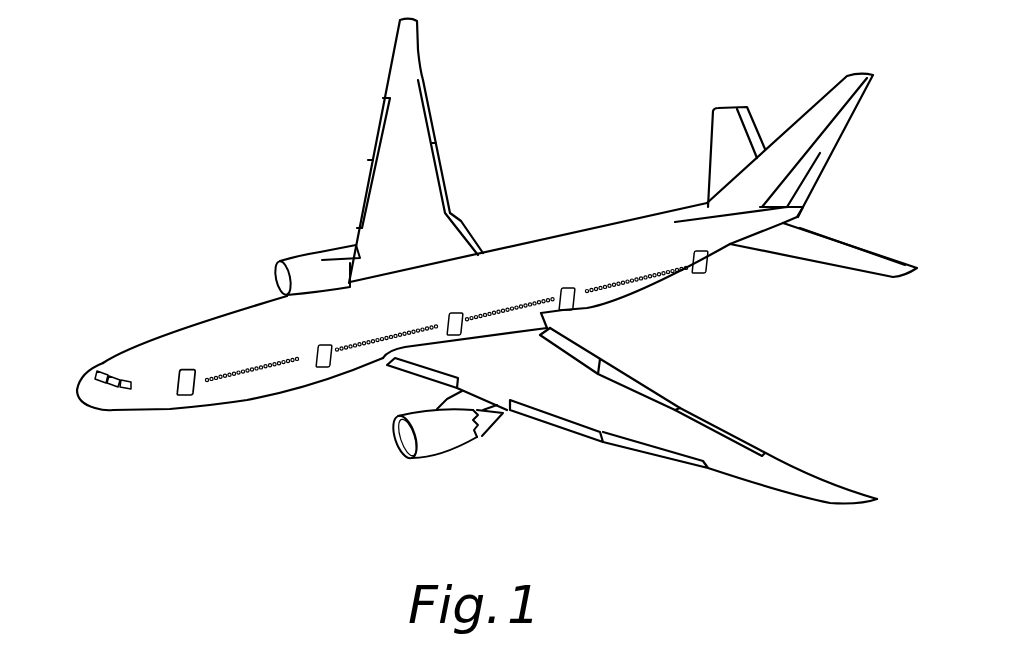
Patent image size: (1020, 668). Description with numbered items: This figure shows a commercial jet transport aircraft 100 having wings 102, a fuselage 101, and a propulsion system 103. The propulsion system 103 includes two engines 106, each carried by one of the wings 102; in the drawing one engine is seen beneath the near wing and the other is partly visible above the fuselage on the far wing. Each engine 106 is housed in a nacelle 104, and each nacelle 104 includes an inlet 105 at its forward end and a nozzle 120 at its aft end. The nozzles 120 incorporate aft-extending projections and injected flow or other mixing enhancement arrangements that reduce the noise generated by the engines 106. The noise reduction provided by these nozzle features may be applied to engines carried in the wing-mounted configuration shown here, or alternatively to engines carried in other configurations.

The commercial jet transport aircraft 100 is at (99, 262).
The fuselage 101 is at (237, 298).
The wings 102 is at (410, 187).
The propulsion system 103 is at (437, 486).
The nacelle 104 is at (460, 442).
The inlet 105 is at (394, 465).
The engine 106 is at (302, 257).
The nozzle 120 is at (503, 431).